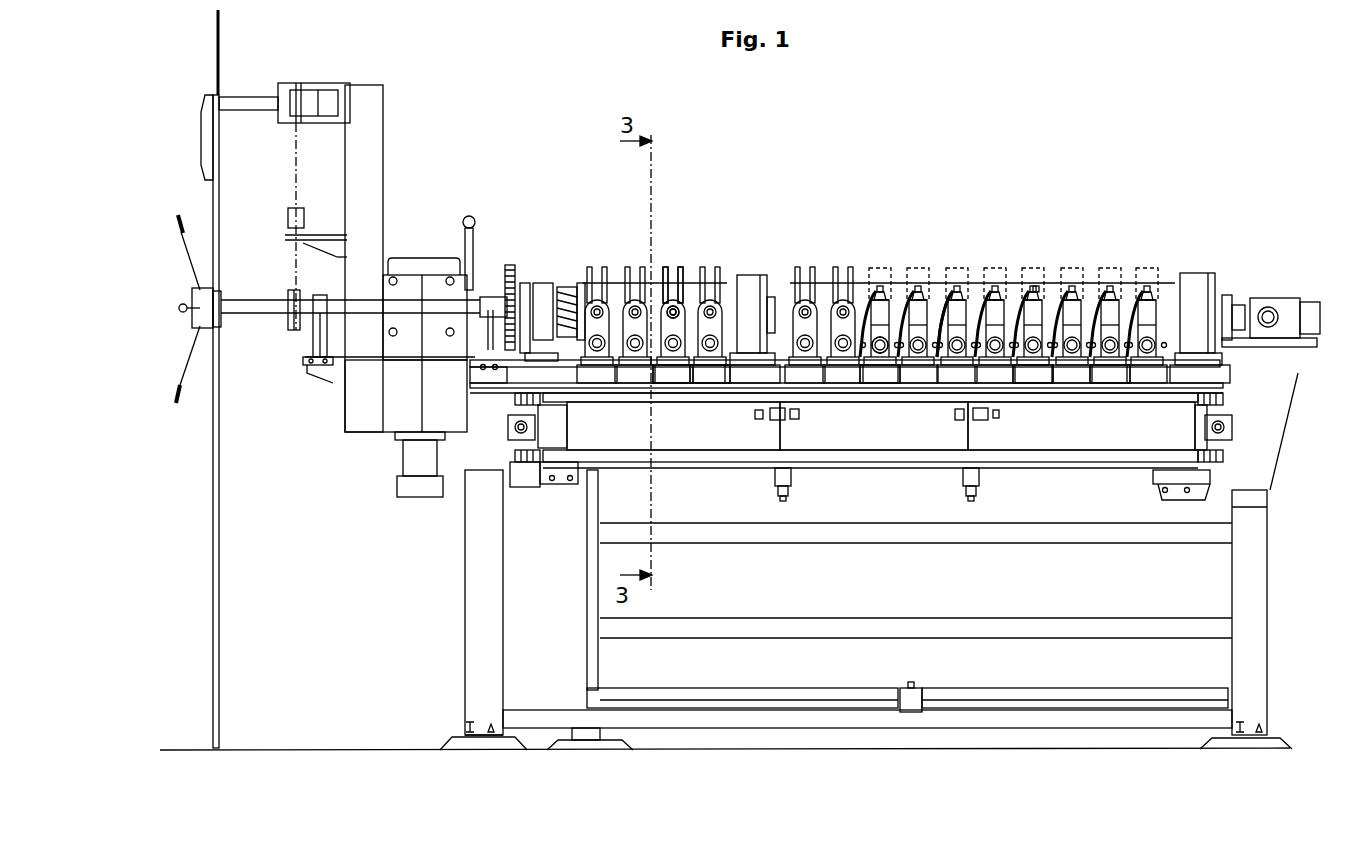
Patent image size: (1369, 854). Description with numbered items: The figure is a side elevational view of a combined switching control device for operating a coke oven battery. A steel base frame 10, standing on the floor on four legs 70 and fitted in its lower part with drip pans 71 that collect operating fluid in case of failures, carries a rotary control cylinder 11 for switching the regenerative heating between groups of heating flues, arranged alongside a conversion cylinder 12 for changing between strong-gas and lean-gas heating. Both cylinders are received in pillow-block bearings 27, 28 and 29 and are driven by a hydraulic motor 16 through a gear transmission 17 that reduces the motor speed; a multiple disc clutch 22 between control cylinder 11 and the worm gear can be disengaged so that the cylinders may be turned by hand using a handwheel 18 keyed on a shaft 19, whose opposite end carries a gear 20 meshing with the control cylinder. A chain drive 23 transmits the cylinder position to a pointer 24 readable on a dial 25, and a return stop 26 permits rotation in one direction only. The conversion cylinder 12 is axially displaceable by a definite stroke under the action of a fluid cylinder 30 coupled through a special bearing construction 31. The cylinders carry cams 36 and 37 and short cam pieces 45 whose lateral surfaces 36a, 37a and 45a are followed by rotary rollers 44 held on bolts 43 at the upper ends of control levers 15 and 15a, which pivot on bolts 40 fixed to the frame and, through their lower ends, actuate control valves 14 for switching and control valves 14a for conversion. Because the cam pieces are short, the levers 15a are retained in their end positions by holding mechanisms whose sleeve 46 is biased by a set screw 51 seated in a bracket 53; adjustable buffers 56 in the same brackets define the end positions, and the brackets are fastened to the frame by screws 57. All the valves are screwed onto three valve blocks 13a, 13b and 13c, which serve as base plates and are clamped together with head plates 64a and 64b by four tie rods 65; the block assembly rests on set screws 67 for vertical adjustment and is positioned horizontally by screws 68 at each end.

The base frame 10 is at (357, 398).
The control cylinder 11 is at (578, 300).
The conversion cylinder 12 is at (1003, 290).
The valve block 13a is at (702, 442).
The valve block 13b is at (886, 440).
The valve block 13c is at (1062, 448).
The control valve 14 is at (667, 378).
The control valve 14a is at (1030, 380).
The control lever 15 is at (635, 300).
The control lever 15a is at (822, 318).
The hydraulic motor 16 is at (404, 488).
The gear transmission 17 is at (416, 260).
The handwheel 18 is at (196, 322).
The shaft 19 is at (263, 315).
The gear 20 is at (508, 278).
The multiple disc clutch 22 is at (466, 218).
The chain drive 23 is at (293, 265).
The pointer 24 is at (206, 136).
The dial 25 is at (216, 62).
The return stop 26 is at (524, 290).
The pillow-block bearing 27 is at (542, 285).
The pillow-block bearing 28 is at (756, 280).
The pillow-block bearing 29 is at (1207, 275).
The cylinder 30 is at (1290, 318).
The bearing construction 31 is at (1247, 300).
The cam 36 is at (673, 300).
The lateral surface 36a is at (668, 280).
The cam 37 is at (676, 306).
The lateral surface 37a is at (681, 296).
The bolt 40 is at (713, 352).
The bolt 43 is at (678, 313).
The rotary roller 44 is at (690, 313).
The cam piece 45 is at (948, 275).
The lateral surface 45a is at (957, 270).
The sleeve 46 is at (909, 320).
The set screw 51 is at (890, 300).
The bracket 53 is at (886, 284).
The adjustable buffer 56 is at (1058, 300).
The screw 57 is at (1153, 292).
The head plate 64a is at (548, 432).
The head plate 64b is at (1200, 442).
The tie rod 65 is at (528, 460).
The set screw 67 is at (553, 485).
The screw 68 is at (520, 430).
The leg 70 is at (505, 735).
The drip pan 71 is at (770, 696).